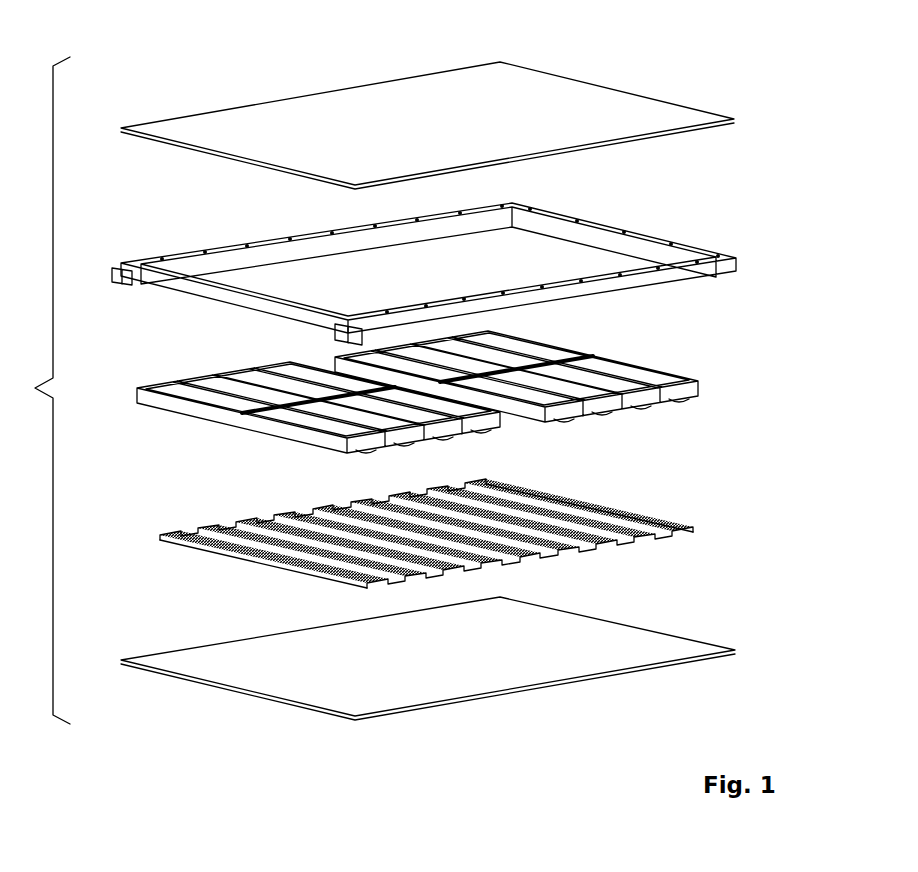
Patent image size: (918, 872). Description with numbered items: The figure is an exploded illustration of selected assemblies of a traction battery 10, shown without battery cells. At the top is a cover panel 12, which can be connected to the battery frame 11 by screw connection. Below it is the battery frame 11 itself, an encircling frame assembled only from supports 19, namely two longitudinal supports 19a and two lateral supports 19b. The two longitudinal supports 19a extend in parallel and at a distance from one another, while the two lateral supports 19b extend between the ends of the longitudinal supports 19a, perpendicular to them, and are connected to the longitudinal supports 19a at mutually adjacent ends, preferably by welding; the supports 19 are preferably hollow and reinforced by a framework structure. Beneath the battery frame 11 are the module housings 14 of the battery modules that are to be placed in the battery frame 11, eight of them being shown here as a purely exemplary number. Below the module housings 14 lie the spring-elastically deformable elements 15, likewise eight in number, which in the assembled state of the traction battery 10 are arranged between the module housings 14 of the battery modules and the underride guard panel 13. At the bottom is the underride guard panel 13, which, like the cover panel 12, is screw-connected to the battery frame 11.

The traction battery 10 is at (36, 390).
The battery frame 11 is at (727, 235).
The cover panel 12 is at (638, 68).
The underride guard panel 13 is at (210, 698).
The module housings 14 is at (288, 450).
The spring-elastically deformable elements 15 is at (260, 573).
The supports 19 is at (650, 283).
The longitudinal supports 19a is at (203, 253).
The lateral supports 19b is at (637, 230).